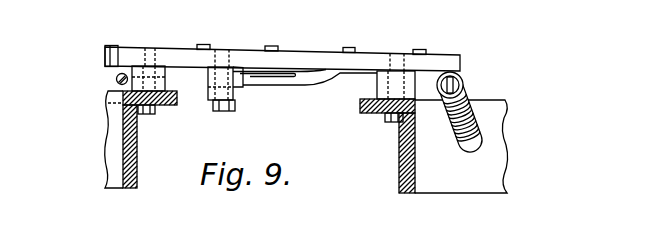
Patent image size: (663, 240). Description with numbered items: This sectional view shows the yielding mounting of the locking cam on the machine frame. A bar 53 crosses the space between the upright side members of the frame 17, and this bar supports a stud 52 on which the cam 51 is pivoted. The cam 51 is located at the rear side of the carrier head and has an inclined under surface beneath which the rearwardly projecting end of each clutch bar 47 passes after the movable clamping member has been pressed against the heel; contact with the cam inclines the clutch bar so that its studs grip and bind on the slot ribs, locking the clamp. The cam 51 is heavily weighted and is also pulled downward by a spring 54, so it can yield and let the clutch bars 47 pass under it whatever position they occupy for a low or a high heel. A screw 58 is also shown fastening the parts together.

The wall / frame member 17 is at (115, 148).
The lugs on bar 47 is at (118, 48).
The spring strip 51 is at (452, 60).
The nut 52 is at (240, 113).
The bar 53 is at (180, 55).
The screw 54 is at (462, 90).
The screw 58 is at (116, 80).